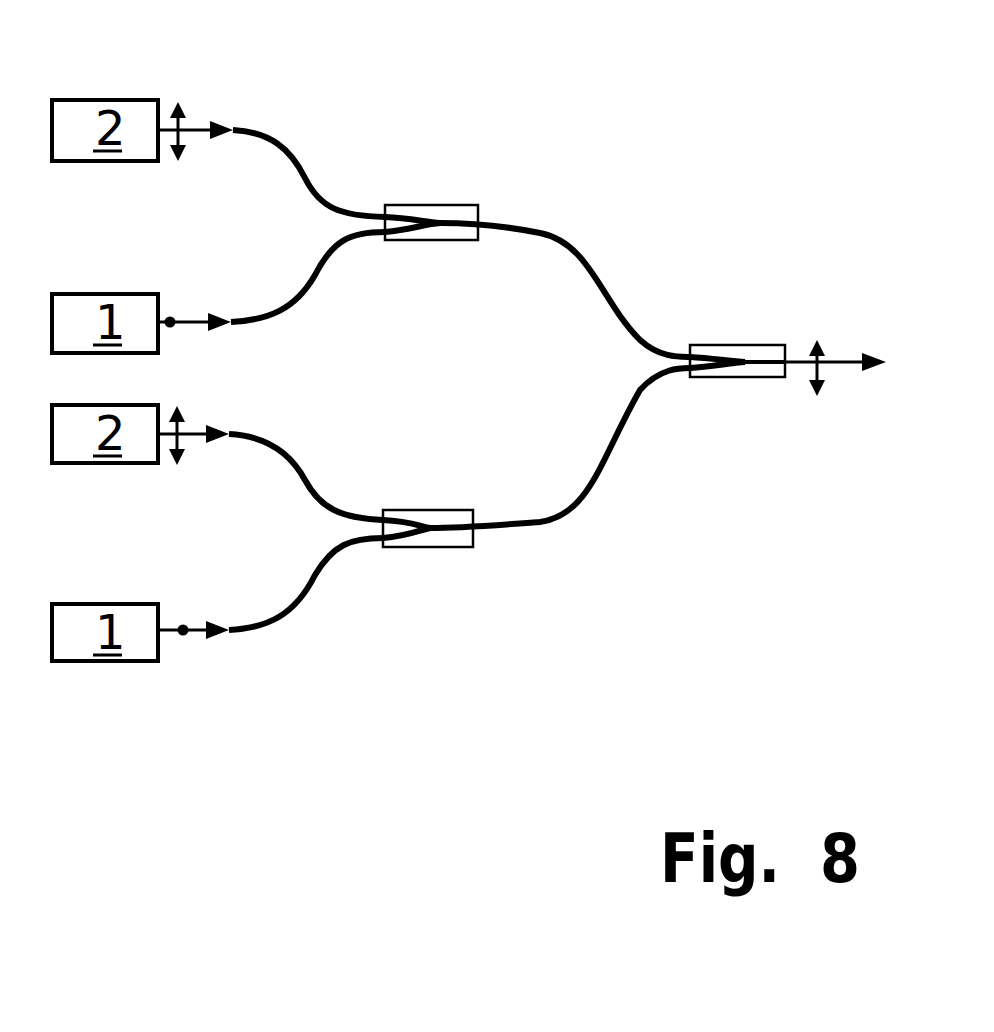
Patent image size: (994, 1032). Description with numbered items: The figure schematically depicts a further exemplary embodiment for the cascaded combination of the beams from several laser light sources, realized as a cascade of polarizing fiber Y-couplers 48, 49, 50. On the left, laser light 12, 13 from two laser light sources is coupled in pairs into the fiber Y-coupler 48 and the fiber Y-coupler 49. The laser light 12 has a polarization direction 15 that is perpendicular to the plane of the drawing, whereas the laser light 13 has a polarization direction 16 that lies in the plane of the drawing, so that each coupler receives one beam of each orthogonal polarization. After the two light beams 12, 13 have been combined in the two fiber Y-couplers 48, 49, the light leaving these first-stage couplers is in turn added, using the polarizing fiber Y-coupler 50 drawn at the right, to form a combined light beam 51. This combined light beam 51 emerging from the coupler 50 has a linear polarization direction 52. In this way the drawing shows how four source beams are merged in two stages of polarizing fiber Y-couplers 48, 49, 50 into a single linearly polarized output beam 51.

The laser light 12 is at (202, 317).
The laser light 13 is at (203, 127).
The polarization direction 15 is at (173, 313).
The polarization direction 16 is at (178, 108).
The polarizing fiber Y-coupler 48 is at (455, 186).
The polarizing fiber Y-coupler 49 is at (413, 562).
The polarizing fiber Y-coupler 50 is at (600, 362).
The combined light beam 51 is at (852, 370).
The linear polarization direction 52 is at (817, 337).